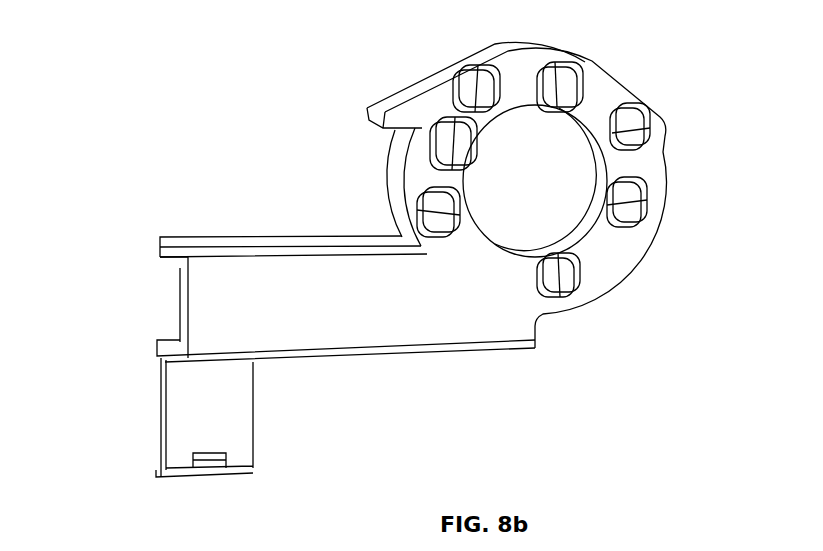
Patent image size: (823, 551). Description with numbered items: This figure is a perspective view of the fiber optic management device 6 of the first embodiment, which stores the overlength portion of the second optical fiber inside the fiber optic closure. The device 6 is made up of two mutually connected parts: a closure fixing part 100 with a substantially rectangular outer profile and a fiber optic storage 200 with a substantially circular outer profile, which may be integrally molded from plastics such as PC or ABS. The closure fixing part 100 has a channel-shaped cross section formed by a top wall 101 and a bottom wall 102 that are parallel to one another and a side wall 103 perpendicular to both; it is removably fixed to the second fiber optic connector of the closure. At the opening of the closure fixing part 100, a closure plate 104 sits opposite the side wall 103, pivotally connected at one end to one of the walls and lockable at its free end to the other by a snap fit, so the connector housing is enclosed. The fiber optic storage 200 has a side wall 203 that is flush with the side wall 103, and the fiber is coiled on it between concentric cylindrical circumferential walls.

The fiber optic management device 6 is at (673, 40).
The closure fixing part 100 is at (270, 246).
The top wall 101 is at (158, 248).
The bottom wall 102 is at (167, 356).
The side wall 103 is at (188, 315).
The closure plate 104 is at (172, 428).
The fiber optic storage 200 is at (663, 178).
The side wall 203 is at (632, 238).